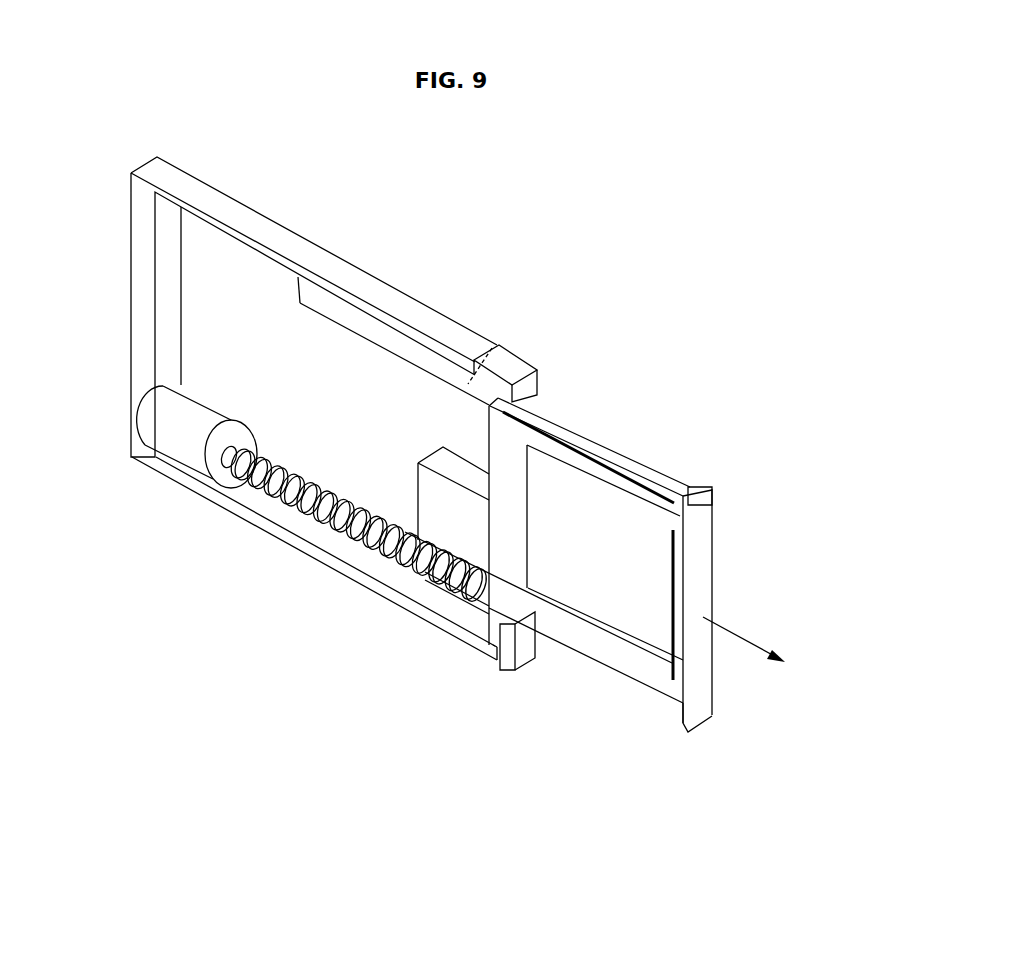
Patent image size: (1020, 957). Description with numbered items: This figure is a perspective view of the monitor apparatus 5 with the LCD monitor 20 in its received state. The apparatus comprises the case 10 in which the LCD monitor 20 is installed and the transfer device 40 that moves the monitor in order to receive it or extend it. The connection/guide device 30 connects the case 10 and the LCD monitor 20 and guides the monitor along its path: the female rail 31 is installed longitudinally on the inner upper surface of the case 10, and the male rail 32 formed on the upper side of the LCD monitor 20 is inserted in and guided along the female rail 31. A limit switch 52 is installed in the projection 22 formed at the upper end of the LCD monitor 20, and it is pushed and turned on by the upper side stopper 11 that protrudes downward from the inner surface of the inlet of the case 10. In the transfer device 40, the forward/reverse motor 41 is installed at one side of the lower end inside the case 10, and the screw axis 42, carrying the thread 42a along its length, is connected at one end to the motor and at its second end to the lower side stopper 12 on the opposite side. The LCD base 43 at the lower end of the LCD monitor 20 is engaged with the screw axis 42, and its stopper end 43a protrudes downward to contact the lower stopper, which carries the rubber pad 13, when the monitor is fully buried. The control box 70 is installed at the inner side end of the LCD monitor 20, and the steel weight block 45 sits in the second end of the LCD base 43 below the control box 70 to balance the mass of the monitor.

The monitor apparatus 5 is at (268, 556).
The case 10 is at (133, 310).
The upper side stopper 11 is at (497, 399).
The lower side stopper 12 is at (482, 657).
The rubber pad 13 is at (495, 668).
The LCD monitor 20 is at (660, 596).
The projection 22 is at (690, 487).
The connection/guide device 30 is at (632, 280).
The female rail 31 is at (499, 347).
The male rail 32 is at (583, 441).
The transfer device 40 is at (273, 457).
The forward/reverse motor 41 is at (191, 401).
The screw axis 42 is at (352, 536).
The thread 42a is at (300, 474).
The LCD base 43 is at (595, 652).
The stopper end 43a is at (683, 730).
The weight block 45 is at (448, 571).
The limit switch 52 is at (700, 486).
The control box 70 is at (427, 459).